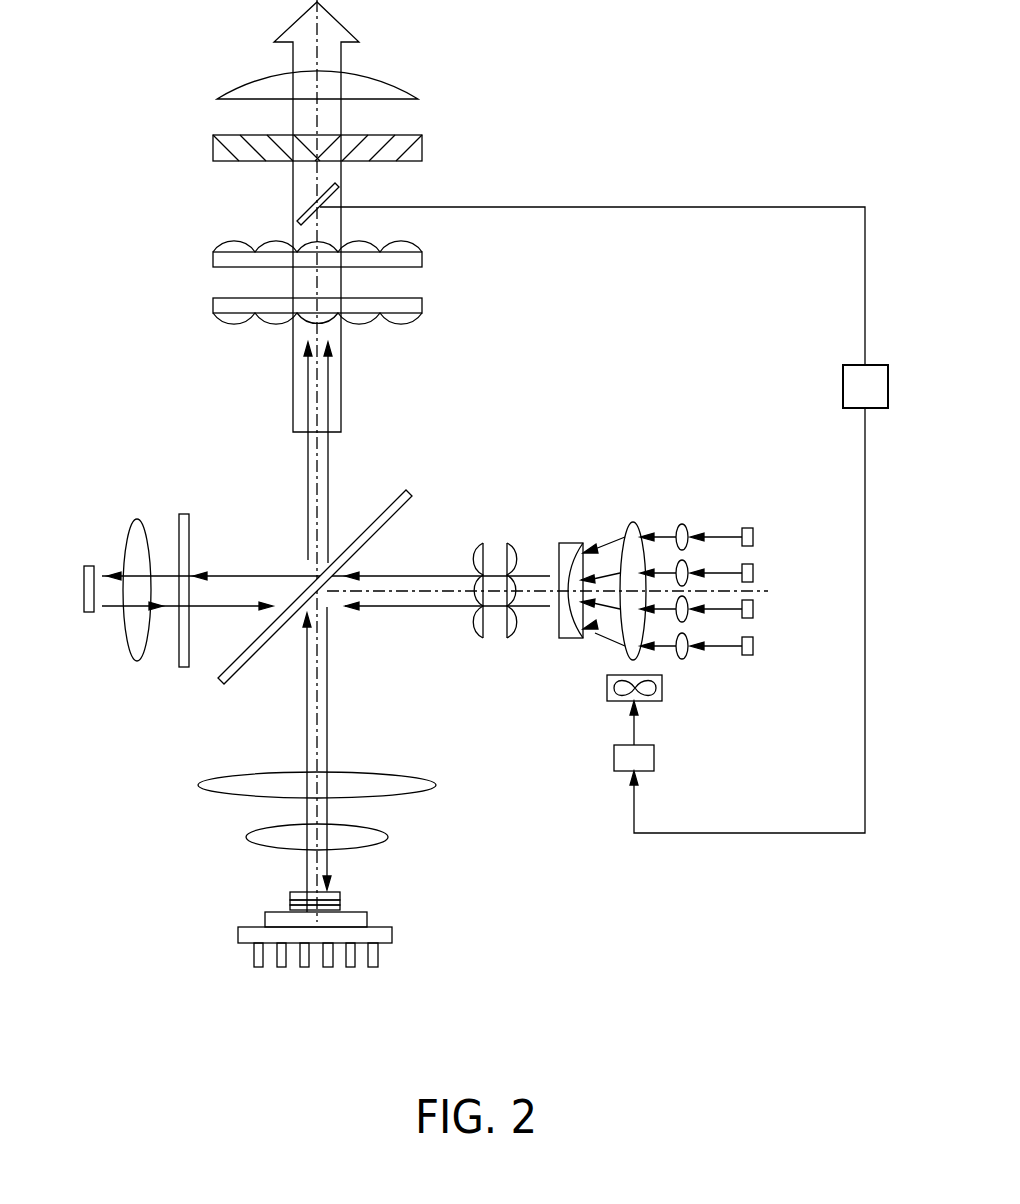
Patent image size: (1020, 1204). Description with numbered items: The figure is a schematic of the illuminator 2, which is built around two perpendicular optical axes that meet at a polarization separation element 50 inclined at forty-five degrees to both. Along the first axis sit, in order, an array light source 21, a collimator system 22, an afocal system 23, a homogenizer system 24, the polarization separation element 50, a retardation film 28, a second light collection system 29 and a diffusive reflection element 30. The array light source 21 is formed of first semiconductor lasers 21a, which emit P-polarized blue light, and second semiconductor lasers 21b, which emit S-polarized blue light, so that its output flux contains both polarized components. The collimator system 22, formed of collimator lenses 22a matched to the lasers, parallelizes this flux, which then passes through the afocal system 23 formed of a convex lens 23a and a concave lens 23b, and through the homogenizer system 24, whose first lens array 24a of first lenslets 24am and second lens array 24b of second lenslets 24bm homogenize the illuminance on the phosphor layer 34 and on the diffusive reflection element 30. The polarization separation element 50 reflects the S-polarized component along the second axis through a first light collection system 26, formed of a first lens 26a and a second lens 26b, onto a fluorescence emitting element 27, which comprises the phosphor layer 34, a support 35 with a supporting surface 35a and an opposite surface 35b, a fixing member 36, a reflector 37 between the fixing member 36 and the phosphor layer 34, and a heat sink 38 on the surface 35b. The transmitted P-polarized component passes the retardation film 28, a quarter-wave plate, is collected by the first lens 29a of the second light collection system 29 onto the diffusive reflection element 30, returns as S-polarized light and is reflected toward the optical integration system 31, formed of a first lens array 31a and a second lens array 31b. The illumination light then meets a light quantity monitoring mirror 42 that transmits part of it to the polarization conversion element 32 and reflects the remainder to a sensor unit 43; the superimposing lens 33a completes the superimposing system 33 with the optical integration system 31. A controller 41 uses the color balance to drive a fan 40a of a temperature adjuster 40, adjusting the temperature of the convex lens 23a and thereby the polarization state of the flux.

The illuminator 2 is at (703, 82).
The array light source 21 is at (787, 555).
The first semiconductor lasers 21a is at (755, 537).
The second semiconductor lasers 21b is at (755, 578).
The collimator system 22 is at (695, 500).
The collimator lenses 22a is at (682, 524).
The afocal system 23 is at (610, 541).
The convex lens 23a is at (633, 522).
The concave lens 23b is at (571, 543).
The homogenizer system 24 is at (499, 575).
The first lens array 24a is at (510, 543).
The second lens array 24b is at (483, 543).
The first lenslets 24am is at (510, 640).
The second lenslets 24bm is at (483, 638).
The first light collection system 26 is at (387, 814).
The first lens 26a is at (436, 786).
The second lens 26b is at (388, 838).
The fluorescence emitting element 27 is at (294, 914).
The retardation film 28 is at (184, 514).
The second light collection system 29 is at (134, 505).
The first lens 29a is at (126, 643).
The diffusive reflection element 30 is at (90, 566).
The optical integration system 31 is at (383, 283).
The first lens array 31a is at (422, 312).
The second lens array 31b is at (422, 262).
The polarization conversion element 32 is at (422, 152).
The superimposing system 33 is at (382, 80).
The superimposing lens 33a is at (405, 77).
The phosphor layer 34 is at (340, 895).
The support 35 is at (280, 931).
The surface 35a is at (275, 910).
The surface 35b is at (272, 940).
The fixing member 36 is at (340, 908).
The reflector 37 is at (340, 903).
The heat sink 38 is at (242, 933).
The temperature adjuster 40 is at (698, 714).
The fan 40a is at (662, 695).
The controller 41 is at (654, 765).
The light quantity monitoring mirror 42 is at (300, 211).
The sensor unit 43 is at (843, 378).
The polarization separation element 50 is at (399, 503).